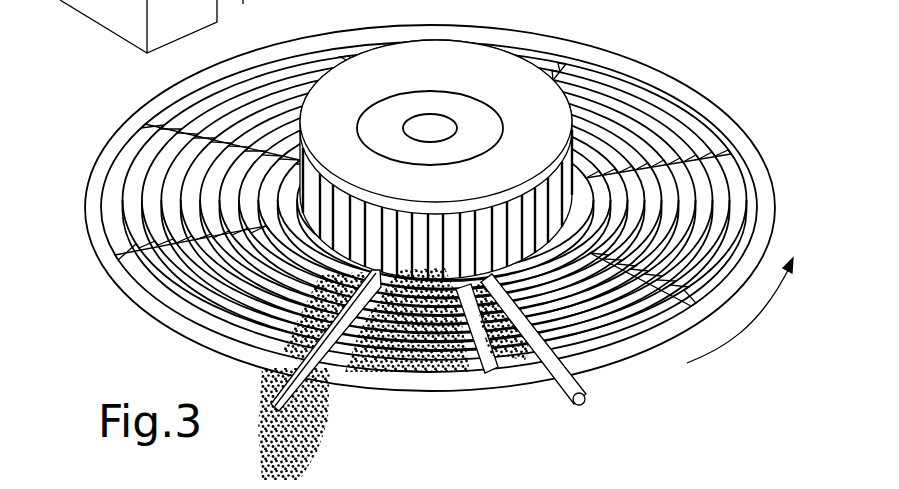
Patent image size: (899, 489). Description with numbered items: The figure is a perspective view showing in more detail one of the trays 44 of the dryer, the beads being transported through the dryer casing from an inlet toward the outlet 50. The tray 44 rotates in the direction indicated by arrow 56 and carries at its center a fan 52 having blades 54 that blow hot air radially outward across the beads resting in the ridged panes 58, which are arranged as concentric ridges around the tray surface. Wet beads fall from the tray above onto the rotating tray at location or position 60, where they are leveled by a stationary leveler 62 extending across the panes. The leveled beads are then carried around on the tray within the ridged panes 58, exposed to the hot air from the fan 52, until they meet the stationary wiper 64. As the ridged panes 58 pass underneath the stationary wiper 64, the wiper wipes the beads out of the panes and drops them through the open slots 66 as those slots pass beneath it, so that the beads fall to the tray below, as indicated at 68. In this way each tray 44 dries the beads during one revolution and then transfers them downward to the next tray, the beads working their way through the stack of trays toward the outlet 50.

The tray 44 is at (585, 47).
The outlet 50 is at (159, 26).
The fan 52 is at (543, 124).
The blades 54 is at (295, 184).
The arrow 56 is at (752, 293).
The ridged panes 58 is at (650, 120).
The location or position 60 is at (413, 372).
The stationary leveler 62 is at (598, 388).
The stationary wiper 64 is at (290, 386).
The open slots 66 is at (158, 116).
The beads dropping to the tray below 68 is at (308, 452).